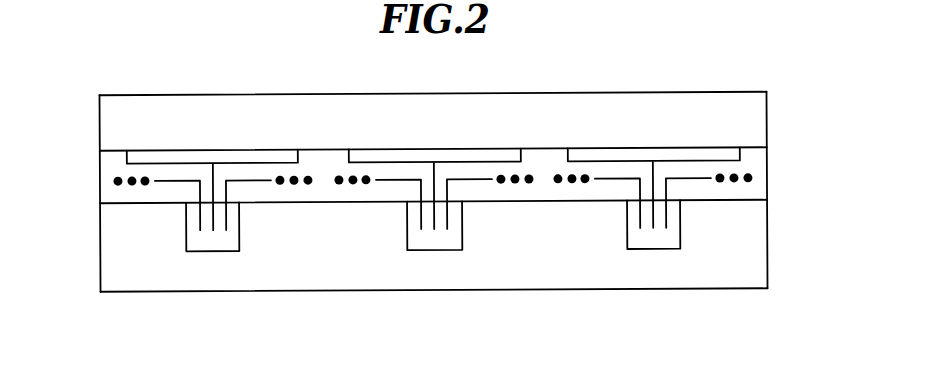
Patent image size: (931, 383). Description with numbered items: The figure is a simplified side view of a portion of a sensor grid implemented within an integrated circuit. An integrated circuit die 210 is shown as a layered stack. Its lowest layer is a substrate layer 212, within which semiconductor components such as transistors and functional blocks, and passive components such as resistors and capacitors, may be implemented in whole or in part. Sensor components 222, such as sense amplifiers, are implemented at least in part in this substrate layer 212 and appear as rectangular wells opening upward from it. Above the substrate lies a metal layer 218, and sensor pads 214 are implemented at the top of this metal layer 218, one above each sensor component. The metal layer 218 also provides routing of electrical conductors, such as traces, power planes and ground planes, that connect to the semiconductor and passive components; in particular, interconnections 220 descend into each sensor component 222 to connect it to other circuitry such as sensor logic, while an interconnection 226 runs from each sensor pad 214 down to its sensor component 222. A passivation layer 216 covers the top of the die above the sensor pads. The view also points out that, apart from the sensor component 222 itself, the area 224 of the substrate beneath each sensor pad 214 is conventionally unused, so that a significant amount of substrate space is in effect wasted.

The integrated circuit die 210 is at (100, 247).
The substrate layer 212 is at (742, 234).
The sensor pads 214 is at (161, 157).
The passivation layer 216 is at (742, 121).
The metal layer 218 is at (742, 166).
The interconnections 220 is at (160, 180).
The sensor components 222 is at (213, 243).
The area 224 is at (271, 232).
The interconnections 226 is at (213, 170).